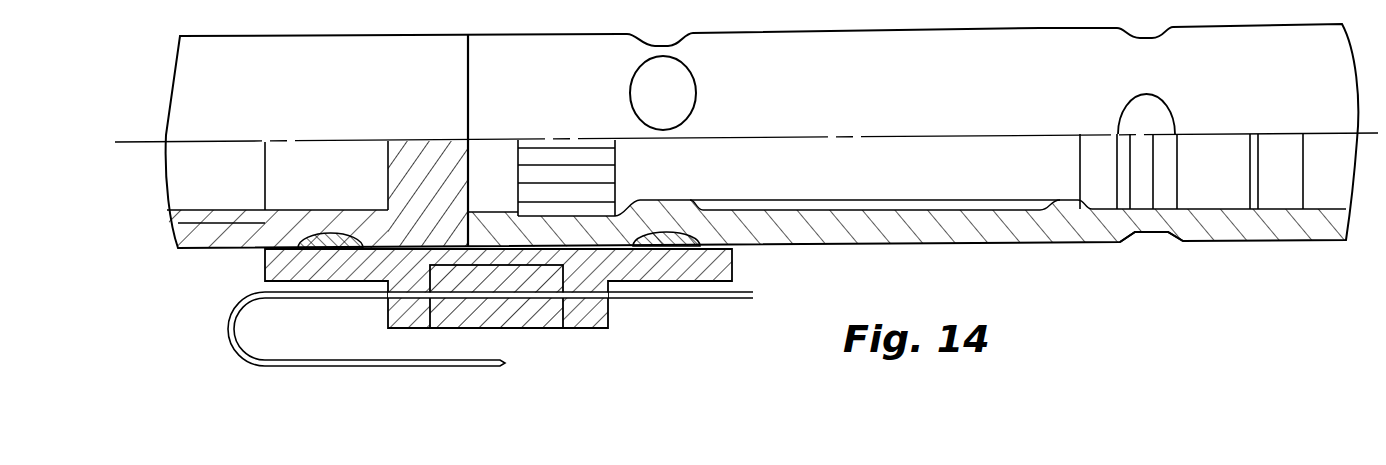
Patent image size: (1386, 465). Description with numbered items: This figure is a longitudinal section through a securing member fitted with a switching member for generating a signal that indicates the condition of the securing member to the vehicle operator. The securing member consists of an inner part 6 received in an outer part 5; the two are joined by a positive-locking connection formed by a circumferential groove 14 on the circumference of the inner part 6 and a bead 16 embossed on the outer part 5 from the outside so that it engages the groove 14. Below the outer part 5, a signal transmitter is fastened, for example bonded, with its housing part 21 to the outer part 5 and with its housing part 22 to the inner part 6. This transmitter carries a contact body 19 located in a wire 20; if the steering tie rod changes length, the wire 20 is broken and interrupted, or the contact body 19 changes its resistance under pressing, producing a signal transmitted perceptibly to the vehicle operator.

The outer part 5 is at (1302, 237).
The inner part 6 is at (995, 158).
The circumferential groove 14 is at (1147, 157).
The bead 16 is at (1147, 241).
The contact body 19 is at (528, 315).
The wire 20 is at (685, 300).
The housing part 21 is at (263, 262).
The housing part 22 is at (618, 265).